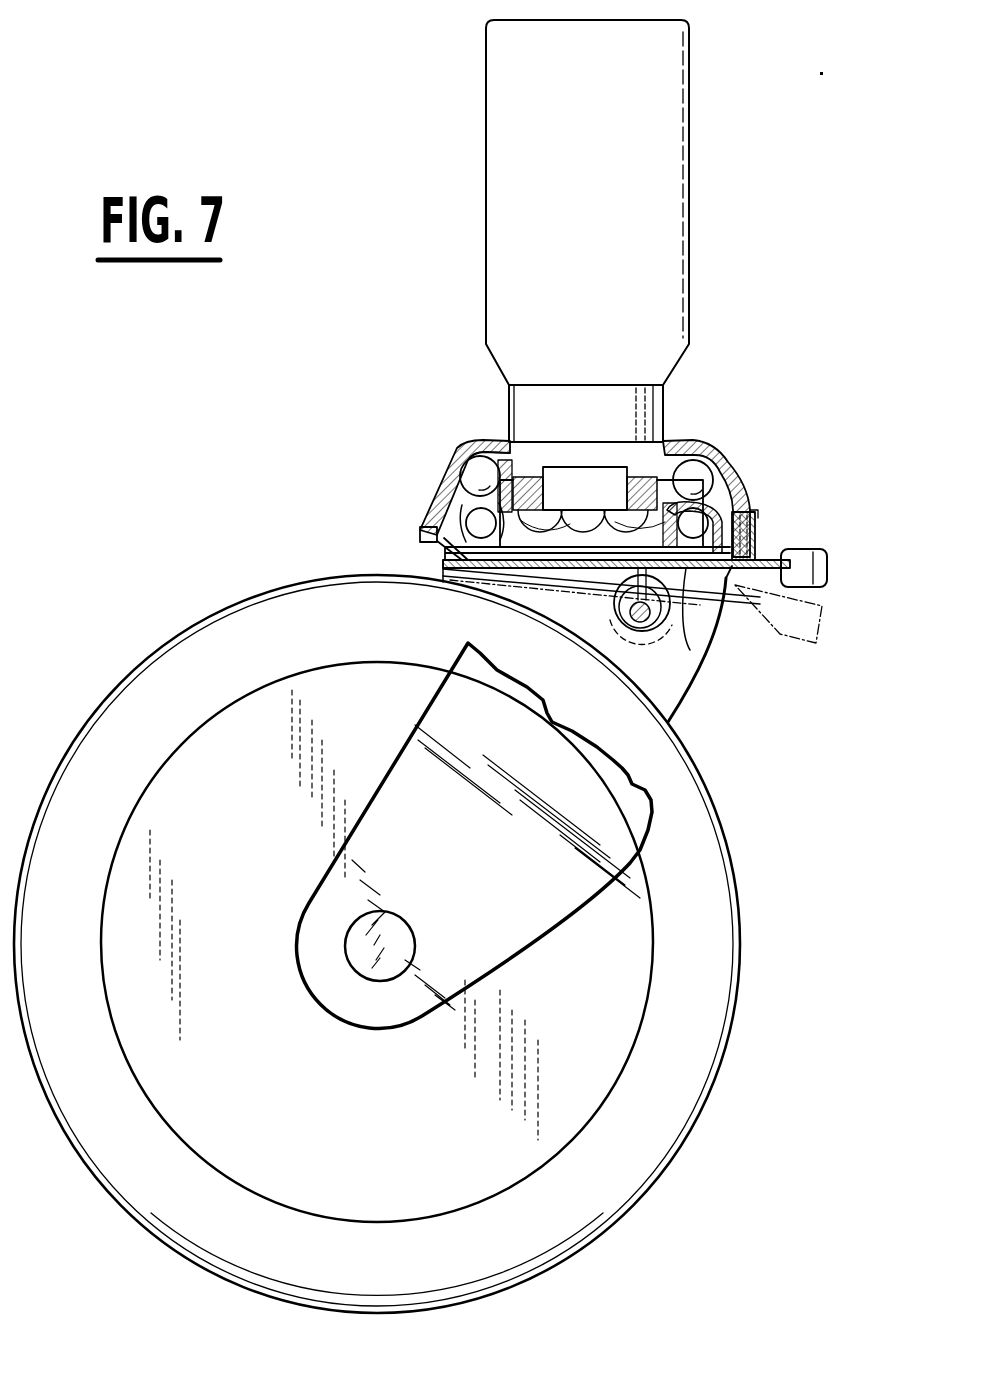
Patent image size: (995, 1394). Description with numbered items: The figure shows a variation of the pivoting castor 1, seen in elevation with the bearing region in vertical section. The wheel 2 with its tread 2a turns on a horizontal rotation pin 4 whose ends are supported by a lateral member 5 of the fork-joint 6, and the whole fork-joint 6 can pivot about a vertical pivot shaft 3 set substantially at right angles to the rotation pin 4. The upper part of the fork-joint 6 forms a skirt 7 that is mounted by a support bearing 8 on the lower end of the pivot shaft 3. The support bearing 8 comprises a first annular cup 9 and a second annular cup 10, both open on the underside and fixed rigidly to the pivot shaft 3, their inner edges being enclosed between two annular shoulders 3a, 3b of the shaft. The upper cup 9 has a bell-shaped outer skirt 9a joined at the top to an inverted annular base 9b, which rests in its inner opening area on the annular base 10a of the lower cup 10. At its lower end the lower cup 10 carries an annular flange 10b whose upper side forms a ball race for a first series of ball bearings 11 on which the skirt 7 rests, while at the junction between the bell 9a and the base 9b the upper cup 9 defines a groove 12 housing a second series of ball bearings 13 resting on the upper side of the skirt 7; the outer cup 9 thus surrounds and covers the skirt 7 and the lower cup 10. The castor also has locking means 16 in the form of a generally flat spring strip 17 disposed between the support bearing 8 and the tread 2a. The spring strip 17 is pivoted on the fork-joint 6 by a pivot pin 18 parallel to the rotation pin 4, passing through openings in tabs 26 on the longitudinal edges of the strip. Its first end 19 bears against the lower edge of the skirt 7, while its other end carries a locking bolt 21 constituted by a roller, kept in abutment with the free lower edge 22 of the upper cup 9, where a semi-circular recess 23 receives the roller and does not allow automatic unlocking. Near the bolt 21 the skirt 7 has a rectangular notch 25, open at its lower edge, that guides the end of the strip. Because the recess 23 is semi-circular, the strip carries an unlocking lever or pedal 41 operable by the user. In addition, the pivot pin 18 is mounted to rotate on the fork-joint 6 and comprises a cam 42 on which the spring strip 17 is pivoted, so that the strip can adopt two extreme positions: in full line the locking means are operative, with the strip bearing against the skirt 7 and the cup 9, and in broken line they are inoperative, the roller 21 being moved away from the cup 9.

The castor 1 is at (203, 522).
The wheel 2 is at (742, 1044).
The tread 2a is at (733, 873).
The vertical pivot shaft 3 is at (670, 166).
The annular shoulder 3a is at (612, 472).
The annular shoulder 3b is at (585, 488).
The horizontal rotation pin 4 is at (357, 933).
The lateral member 5 is at (541, 908).
The fork-joint 6 is at (682, 688).
The skirt 7 is at (440, 557).
The support bearing 8 is at (378, 469).
The first annular cup 9 is at (437, 478).
The bell-shaped outer skirt 9a is at (740, 488).
The inverted annular base 9b is at (695, 442).
The second annular cup 10 is at (472, 570).
The annular base 10a is at (608, 470).
The annular flange 10b is at (690, 648).
The first series of ball bearings 11 is at (465, 507).
The groove 12 is at (473, 473).
The second series of ball bearings 13 is at (453, 453).
The locking means 16 is at (757, 588).
The spring strip 17 is at (581, 579).
The pivot pin 18 is at (617, 596).
The first end 19 is at (448, 574).
The locking bolt 21 is at (757, 533).
The free lower edge 22 is at (427, 546).
The recess 23 is at (757, 514).
The notch 25 is at (764, 604).
The tabs 26 is at (627, 632).
The unlocking lever or pedal 41 is at (813, 550).
The cam 42 is at (597, 588).